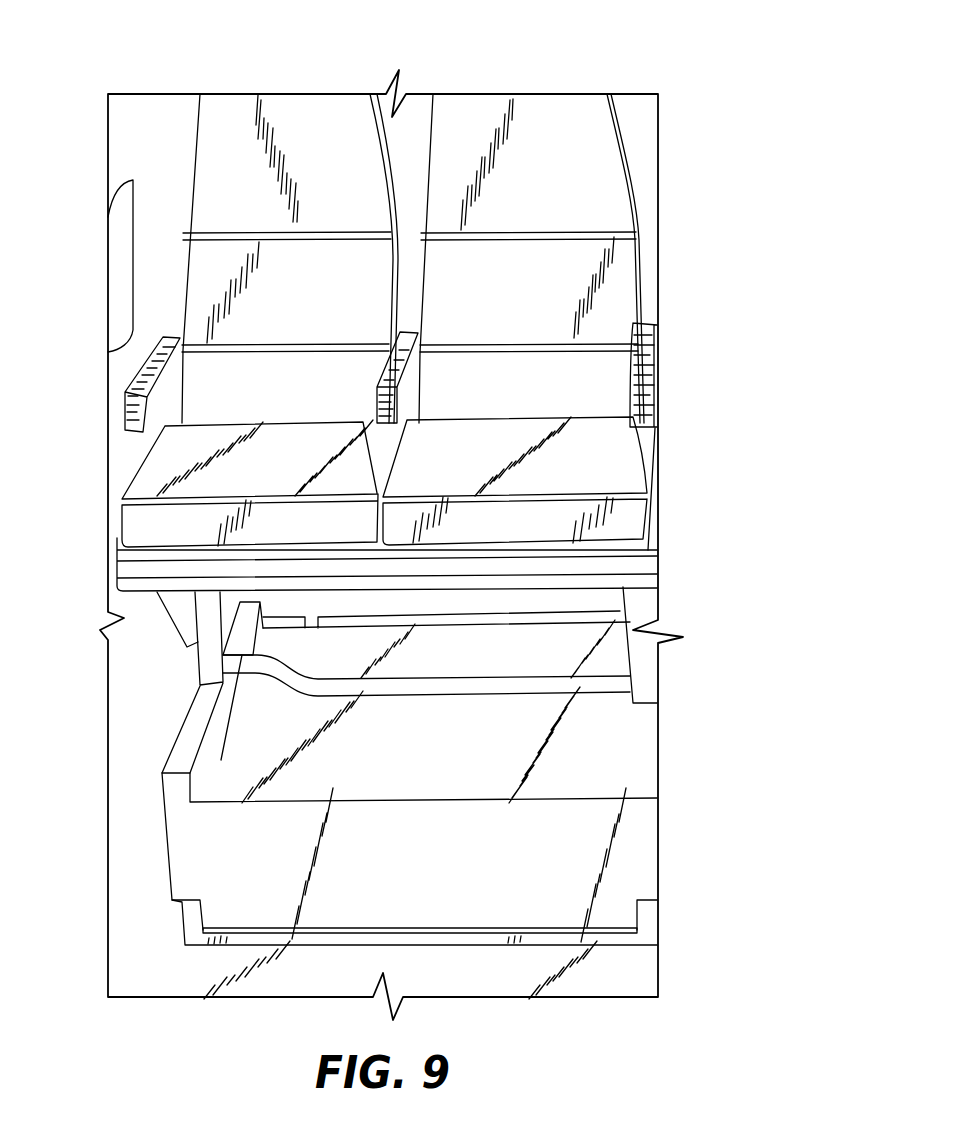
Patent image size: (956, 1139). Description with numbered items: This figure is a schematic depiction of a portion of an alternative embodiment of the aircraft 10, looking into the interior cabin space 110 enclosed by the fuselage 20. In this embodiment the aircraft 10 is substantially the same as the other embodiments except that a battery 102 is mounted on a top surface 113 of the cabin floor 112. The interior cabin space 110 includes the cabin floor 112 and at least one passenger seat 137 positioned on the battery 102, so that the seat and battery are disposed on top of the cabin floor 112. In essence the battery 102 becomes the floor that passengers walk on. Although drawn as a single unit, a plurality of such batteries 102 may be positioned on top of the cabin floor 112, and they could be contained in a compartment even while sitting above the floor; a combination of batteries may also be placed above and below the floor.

The aircraft 10 is at (672, 82).
The fuselage 20 is at (148, 140).
The passenger seat 137 is at (216, 237).
The interior cabin space 110 is at (144, 669).
The battery 102 is at (638, 837).
The top surface 113 is at (610, 930).
The cabin floor 112 is at (208, 939).